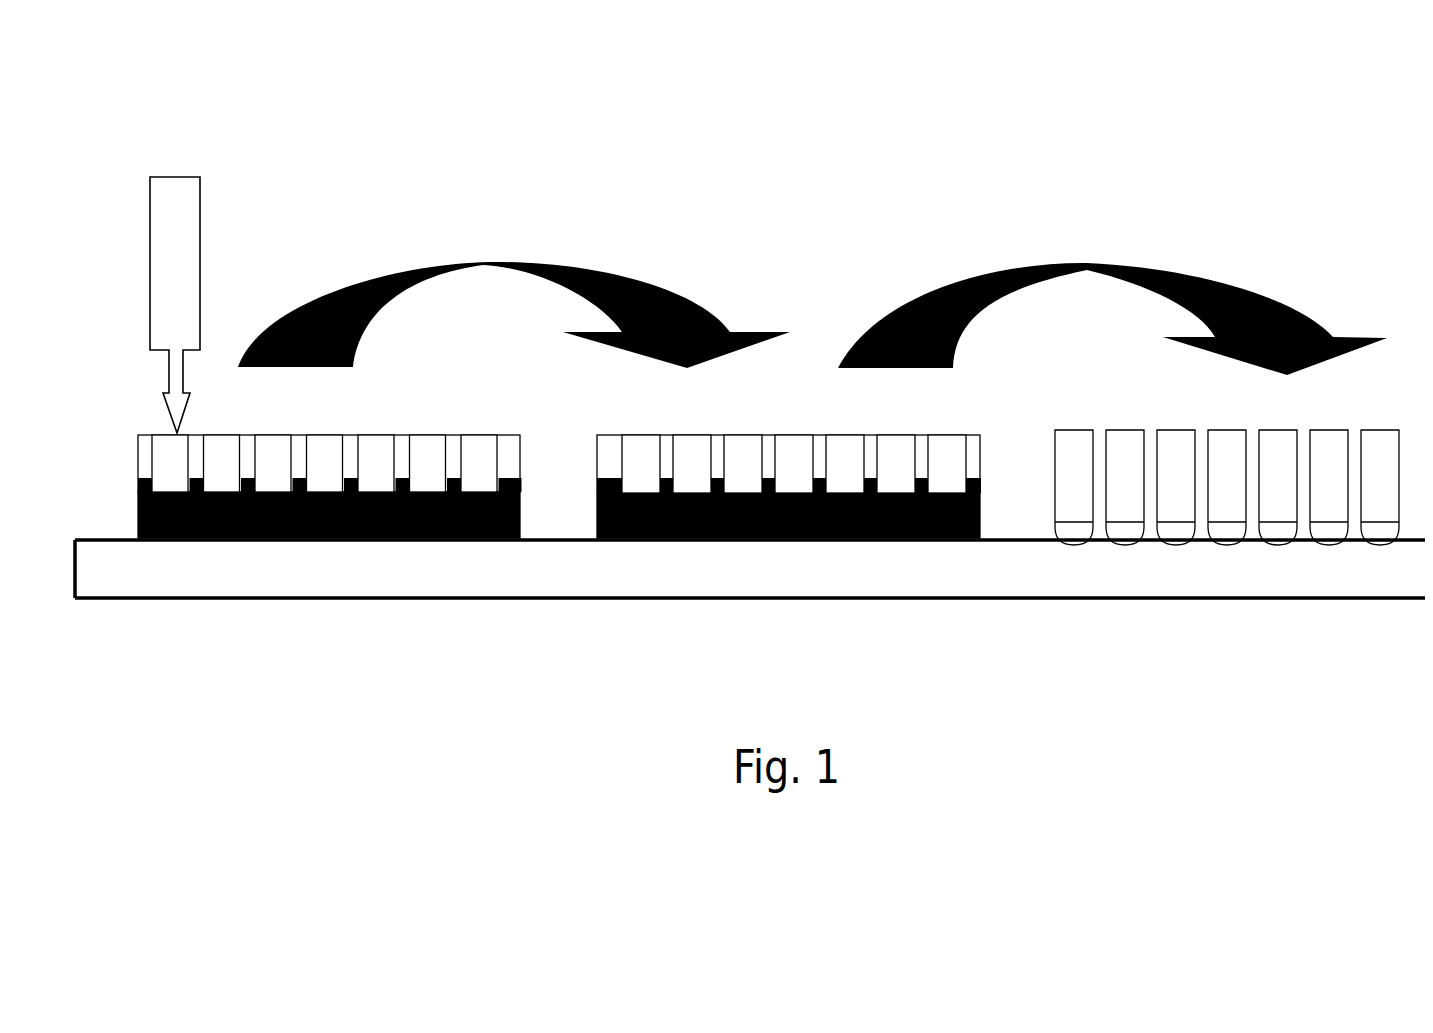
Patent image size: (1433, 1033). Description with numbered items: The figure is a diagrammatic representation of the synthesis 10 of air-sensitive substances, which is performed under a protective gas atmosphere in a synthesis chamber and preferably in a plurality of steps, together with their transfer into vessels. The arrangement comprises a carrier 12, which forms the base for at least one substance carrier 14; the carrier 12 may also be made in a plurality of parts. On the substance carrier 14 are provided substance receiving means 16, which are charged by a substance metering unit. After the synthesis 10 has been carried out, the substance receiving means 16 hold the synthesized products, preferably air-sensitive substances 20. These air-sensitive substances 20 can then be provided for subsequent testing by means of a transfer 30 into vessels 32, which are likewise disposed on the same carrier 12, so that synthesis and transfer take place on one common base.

The synthesis 10 is at (200, 177).
The carrier 12 is at (1023, 587).
The substance carrier 14 is at (490, 540).
The substance receiving means 16 is at (302, 455).
The air-sensitive substances 20 is at (323, 455).
The transfer 30 is at (1080, 206).
The vessels 32 is at (1358, 460).